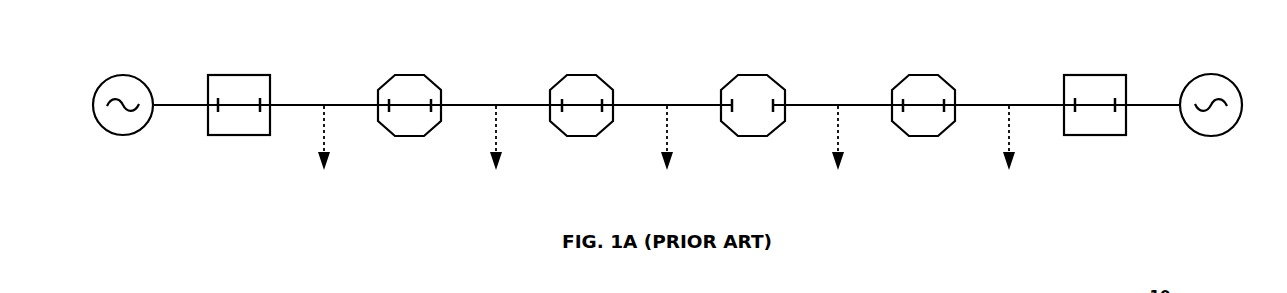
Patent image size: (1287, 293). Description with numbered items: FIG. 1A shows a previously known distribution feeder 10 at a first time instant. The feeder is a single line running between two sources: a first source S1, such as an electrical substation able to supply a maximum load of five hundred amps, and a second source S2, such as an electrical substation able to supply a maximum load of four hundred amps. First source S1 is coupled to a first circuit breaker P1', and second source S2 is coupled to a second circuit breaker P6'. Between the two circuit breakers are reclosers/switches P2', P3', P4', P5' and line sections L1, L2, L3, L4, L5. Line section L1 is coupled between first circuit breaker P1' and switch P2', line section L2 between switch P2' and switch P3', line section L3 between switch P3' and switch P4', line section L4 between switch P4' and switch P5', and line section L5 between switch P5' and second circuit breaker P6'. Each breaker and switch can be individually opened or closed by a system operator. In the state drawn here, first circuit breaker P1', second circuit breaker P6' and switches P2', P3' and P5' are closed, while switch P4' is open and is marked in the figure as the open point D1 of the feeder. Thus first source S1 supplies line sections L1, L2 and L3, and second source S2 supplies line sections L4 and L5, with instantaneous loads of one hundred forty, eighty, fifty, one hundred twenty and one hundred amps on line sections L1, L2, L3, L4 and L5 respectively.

The distribution feeder 10 is at (667, 100).
The first source S1 is at (123, 137).
The second source S2 is at (1211, 137).
The first circuit breaker P1' is at (239, 118).
The switch P2' is at (409, 118).
The switch P3' is at (581, 118).
The switch P4' is at (738, 118).
The switch P5' is at (923, 118).
The second circuit breaker P6' is at (1095, 118).
The disconnect D1 is at (732, 96).
The line section L1 is at (324, 123).
The line section L2 is at (496, 123).
The line section L3 is at (667, 123).
The line section L4 is at (838, 123).
The line section L5 is at (1009, 123).